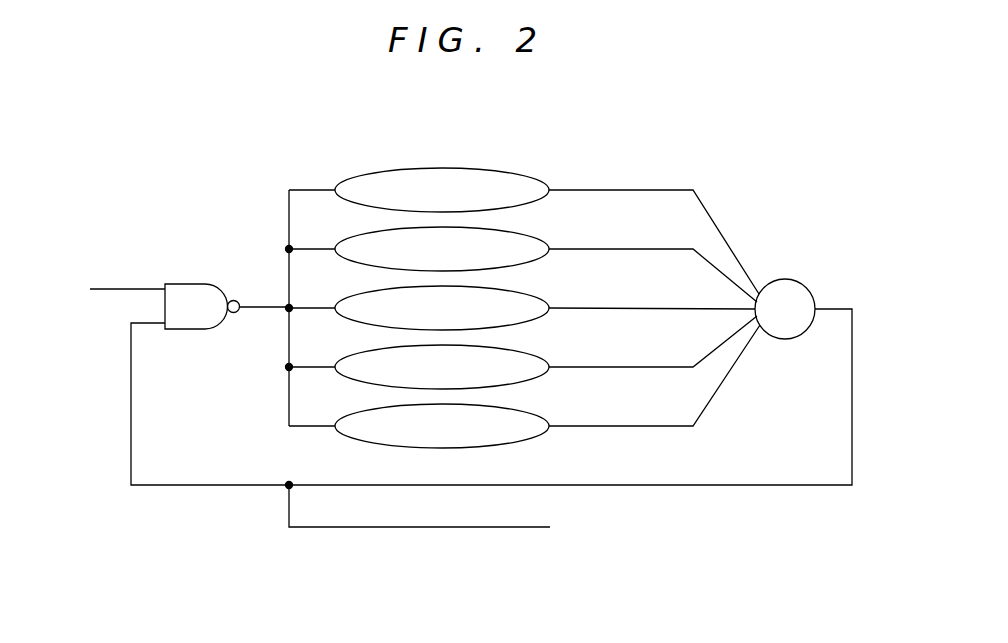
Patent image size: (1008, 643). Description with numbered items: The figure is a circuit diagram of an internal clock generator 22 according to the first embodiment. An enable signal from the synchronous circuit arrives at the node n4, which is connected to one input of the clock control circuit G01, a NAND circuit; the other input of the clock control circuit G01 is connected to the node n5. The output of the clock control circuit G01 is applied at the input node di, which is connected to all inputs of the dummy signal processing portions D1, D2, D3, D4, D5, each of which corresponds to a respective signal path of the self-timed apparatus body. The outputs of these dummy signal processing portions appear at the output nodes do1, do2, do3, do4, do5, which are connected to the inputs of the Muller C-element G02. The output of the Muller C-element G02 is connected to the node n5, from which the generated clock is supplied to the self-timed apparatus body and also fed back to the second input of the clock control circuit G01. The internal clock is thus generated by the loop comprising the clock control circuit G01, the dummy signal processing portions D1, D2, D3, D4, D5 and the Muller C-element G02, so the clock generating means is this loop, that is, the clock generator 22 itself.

The clock generator 22 is at (693, 133).
The node n4 is at (126, 289).
The clock control circuit G01 is at (187, 283).
The node of the input of the dummy signal processing portion di is at (286, 309).
The dummy signal processing portion D1 is at (500, 171).
The dummy signal processing portion D2 is at (500, 231).
The dummy signal processing portion D3 is at (500, 290).
The dummy signal processing portion D4 is at (500, 348).
The dummy signal processing portion D5 is at (500, 408).
The node of the output of the dummy signal processing portion do1 is at (732, 235).
The node of the output of the dummy signal processing portion do2 is at (704, 259).
The node of the output of the dummy signal processing portion do3 is at (647, 307).
The node of the output of the dummy signal processing portion do4 is at (715, 346).
The node of the output of the dummy signal processing portion do5 is at (732, 377).
The Muller C-element G02 is at (817, 262).
The node n5 is at (517, 528).